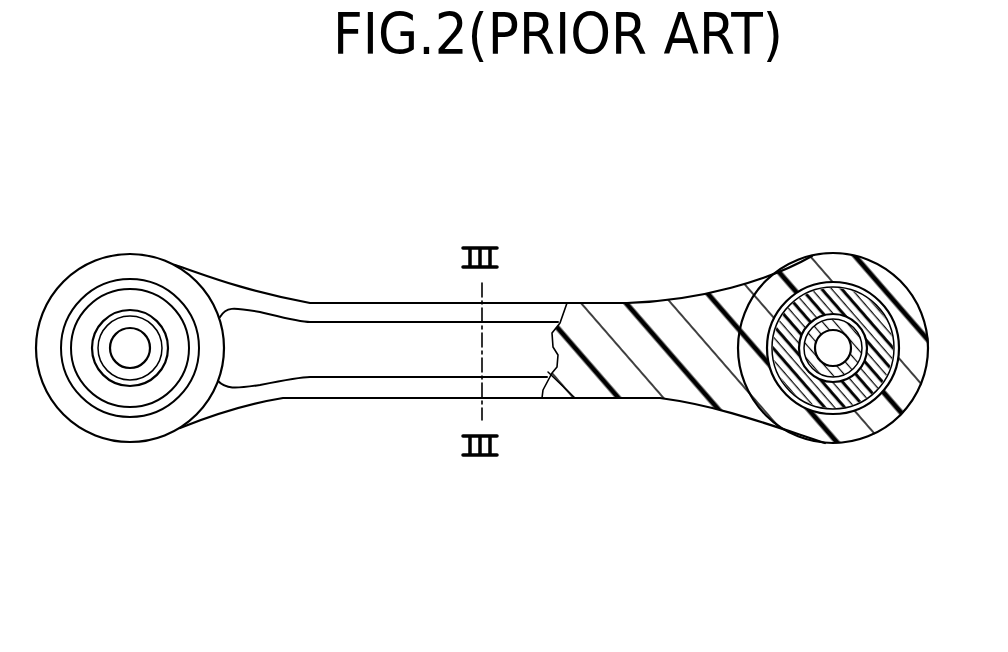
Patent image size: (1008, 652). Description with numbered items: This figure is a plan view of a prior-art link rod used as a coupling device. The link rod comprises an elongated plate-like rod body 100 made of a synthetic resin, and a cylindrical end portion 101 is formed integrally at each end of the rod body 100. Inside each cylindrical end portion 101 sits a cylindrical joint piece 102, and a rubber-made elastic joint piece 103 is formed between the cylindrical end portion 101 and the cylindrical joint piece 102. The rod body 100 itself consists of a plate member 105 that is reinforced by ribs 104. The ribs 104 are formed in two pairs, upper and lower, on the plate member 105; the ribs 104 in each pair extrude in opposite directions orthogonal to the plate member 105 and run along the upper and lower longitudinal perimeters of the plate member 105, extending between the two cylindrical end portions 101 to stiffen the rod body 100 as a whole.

The rod body 100 is at (598, 298).
The cylindrical end portion 101 is at (792, 423).
The cylindrical joint piece 102 is at (130, 373).
The elastic joint piece 103 is at (117, 300).
The ribs 104 is at (353, 305).
The plate member 105 is at (375, 360).